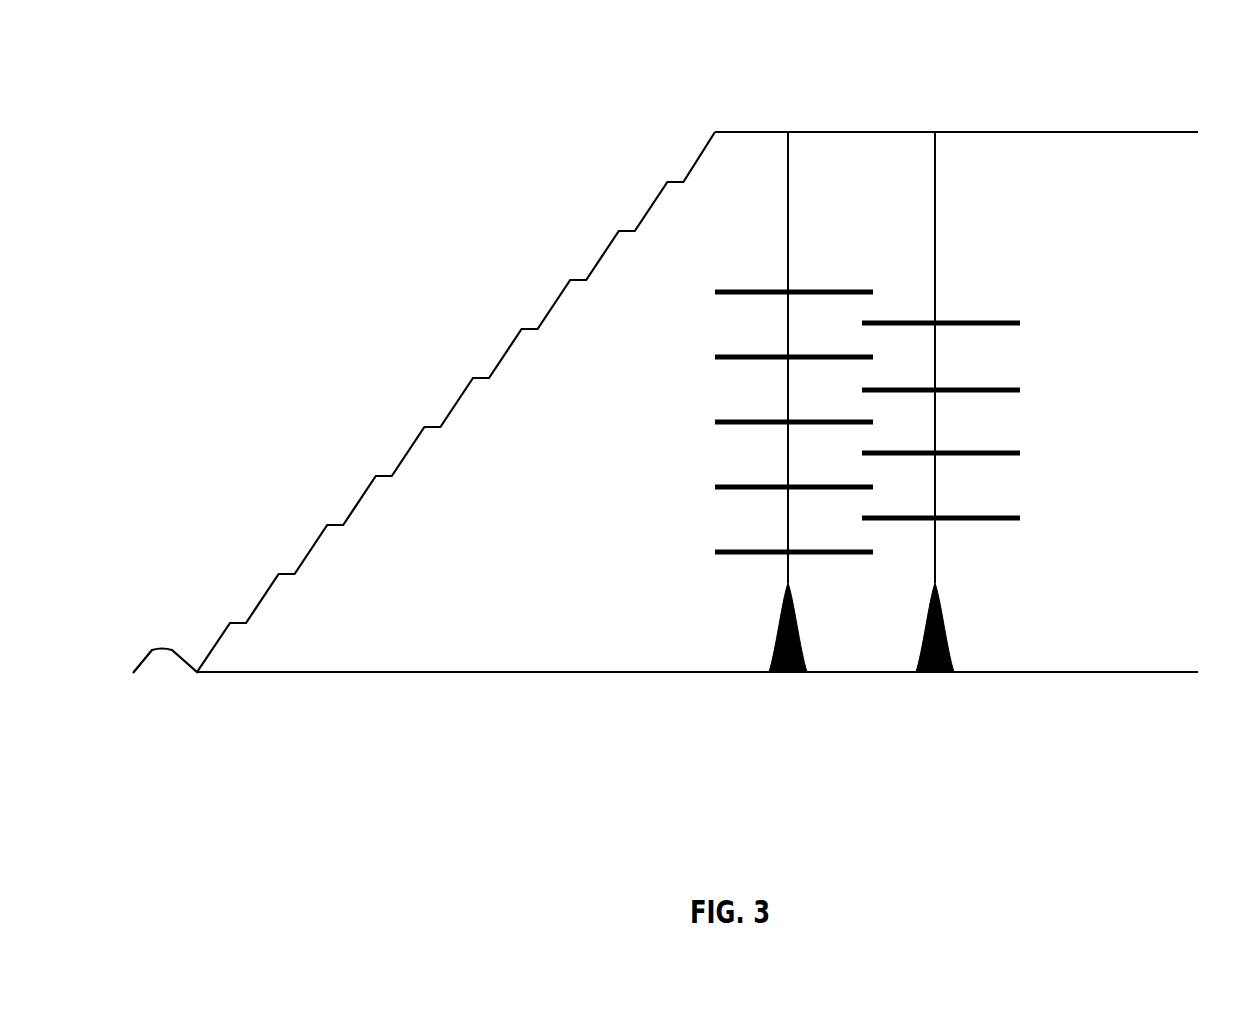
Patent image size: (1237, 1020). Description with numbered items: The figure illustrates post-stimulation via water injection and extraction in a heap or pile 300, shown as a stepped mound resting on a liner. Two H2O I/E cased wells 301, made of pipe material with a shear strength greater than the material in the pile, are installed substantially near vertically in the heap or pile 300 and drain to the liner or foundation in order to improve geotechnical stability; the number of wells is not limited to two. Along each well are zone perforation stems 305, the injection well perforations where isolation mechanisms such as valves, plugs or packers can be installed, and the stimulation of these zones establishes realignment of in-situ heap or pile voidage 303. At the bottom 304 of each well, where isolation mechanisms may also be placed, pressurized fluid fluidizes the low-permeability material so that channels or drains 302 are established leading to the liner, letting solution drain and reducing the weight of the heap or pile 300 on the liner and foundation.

The heap or pile 300 is at (665, 402).
The H2O I/E cased wells 301 is at (936, 118).
The channels or drains 302 is at (935, 682).
The in-situ heap or pile voidage 303 is at (1030, 392).
The bottom of the I/E well 304 is at (938, 553).
The zone perforation stems 305 is at (705, 352).